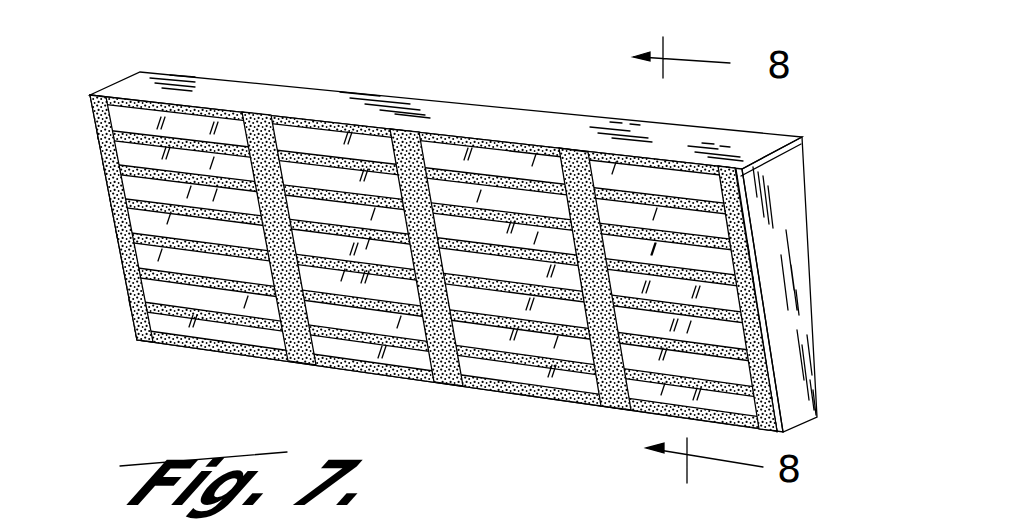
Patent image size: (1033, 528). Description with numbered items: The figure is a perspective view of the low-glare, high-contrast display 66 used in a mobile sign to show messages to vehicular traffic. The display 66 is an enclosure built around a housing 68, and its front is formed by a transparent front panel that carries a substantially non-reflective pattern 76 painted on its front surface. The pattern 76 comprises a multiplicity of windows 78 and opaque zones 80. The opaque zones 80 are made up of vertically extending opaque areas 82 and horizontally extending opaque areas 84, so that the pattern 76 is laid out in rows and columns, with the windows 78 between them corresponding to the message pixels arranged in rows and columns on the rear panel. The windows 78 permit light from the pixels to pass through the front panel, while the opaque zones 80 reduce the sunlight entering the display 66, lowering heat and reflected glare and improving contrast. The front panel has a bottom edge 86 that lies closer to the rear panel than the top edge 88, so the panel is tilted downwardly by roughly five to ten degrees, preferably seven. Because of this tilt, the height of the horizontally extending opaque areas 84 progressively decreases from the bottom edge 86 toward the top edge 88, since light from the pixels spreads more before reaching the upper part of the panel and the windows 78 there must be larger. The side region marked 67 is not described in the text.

The high-contrast display 66 is at (818, 160).
The side edge lip 67 is at (806, 278).
The housing 68 is at (808, 227).
The non-reflective pattern 76 is at (113, 231).
The windows 78 is at (352, 120).
The opaque zones 80 is at (263, 264).
The vertically extending opaque areas 82 is at (448, 379).
The horizontally extending opaque areas 84 is at (330, 328).
The bottom edge 86 is at (187, 346).
The top edge 88 is at (173, 102).